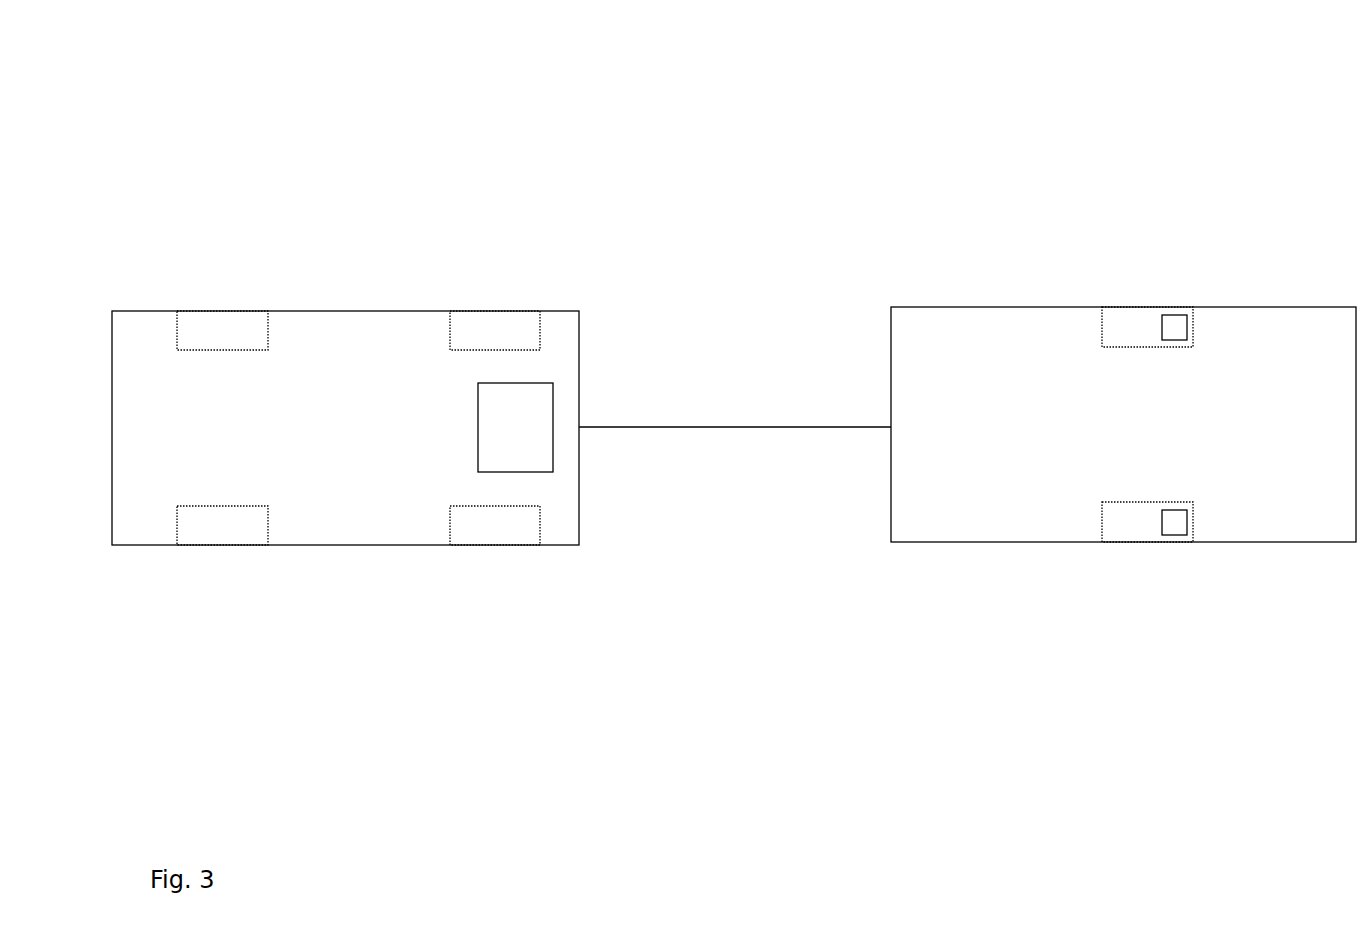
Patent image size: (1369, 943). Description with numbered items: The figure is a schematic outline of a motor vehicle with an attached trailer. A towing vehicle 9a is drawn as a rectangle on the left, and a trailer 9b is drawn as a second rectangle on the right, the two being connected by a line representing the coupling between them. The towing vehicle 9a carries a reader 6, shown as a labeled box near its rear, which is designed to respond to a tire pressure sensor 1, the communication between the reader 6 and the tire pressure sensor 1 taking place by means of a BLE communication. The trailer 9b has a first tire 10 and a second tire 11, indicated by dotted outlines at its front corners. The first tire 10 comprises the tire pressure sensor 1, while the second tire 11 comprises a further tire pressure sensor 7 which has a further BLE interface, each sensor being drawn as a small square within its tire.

The towing vehicle 9a is at (255, 247).
The trailer 9b is at (1007, 258).
The reader 6 is at (545, 383).
The second tire 11 is at (1123, 328).
The further tire pressure sensor 7 is at (1170, 327).
The first tire 10 is at (1137, 522).
The tire pressure sensor 1 is at (1178, 520).